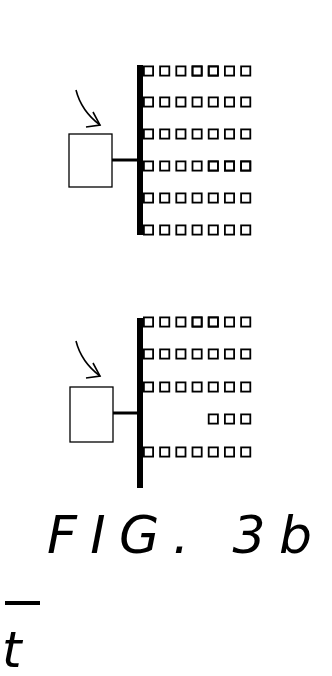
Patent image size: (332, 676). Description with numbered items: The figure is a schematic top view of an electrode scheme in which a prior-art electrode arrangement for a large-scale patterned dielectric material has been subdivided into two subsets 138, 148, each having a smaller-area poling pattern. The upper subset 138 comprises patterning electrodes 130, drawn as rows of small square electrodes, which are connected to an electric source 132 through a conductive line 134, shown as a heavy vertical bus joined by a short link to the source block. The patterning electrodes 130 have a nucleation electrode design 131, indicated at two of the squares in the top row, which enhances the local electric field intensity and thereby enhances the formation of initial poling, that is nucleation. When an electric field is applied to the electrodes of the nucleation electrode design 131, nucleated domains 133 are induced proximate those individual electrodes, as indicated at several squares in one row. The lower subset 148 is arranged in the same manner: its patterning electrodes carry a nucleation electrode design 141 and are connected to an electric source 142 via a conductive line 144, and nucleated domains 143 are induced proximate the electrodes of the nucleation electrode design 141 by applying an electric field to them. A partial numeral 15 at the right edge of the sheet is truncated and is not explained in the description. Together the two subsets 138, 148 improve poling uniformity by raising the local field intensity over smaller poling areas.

The patterning electrodes 130 is at (251, 70).
The nucleation electrode design 131 is at (213, 65).
The electric source 132 is at (69, 152).
The nucleated domains 133 is at (213, 171).
The conductive line 134 is at (137, 204).
The subset 138 is at (80, 93).
The nucleation electrode design 141 is at (213, 316).
The electric source 142 is at (70, 404).
The nucleated domains 143 is at (213, 424).
The conductive line 144 is at (137, 457).
The subset 148 is at (80, 344).
The truncated numeral 15 is at (322, 116).